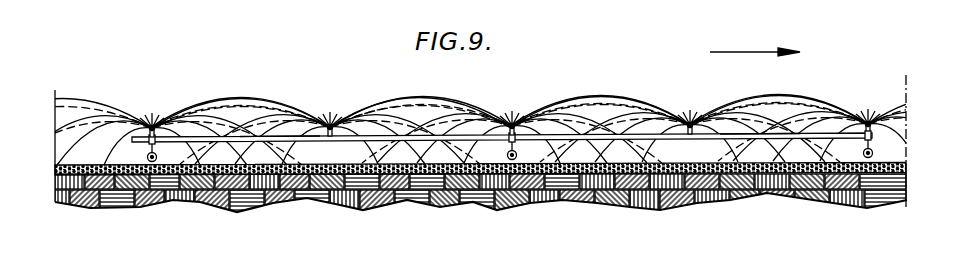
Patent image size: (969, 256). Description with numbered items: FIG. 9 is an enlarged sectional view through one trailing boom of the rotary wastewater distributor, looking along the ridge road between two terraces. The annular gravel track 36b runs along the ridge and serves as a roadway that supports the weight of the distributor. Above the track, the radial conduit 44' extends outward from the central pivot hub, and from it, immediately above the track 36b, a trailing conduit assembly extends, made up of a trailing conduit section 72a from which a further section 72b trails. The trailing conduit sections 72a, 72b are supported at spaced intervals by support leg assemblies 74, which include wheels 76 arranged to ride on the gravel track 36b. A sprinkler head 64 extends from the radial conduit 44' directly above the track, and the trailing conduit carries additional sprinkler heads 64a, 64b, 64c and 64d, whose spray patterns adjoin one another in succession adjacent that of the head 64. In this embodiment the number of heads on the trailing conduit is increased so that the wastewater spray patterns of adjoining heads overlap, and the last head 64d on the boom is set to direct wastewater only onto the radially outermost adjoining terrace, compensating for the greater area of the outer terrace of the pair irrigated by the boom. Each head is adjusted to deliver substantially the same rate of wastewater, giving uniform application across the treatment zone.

The track 36b is at (484, 157).
The radial conduit 44' is at (883, 109).
The sprinkler head 64 is at (866, 123).
The sprinkler head 64a is at (691, 124).
The sprinkler head 64b is at (514, 125).
The sprinkler head 64c is at (332, 126).
The sprinkler head 64d is at (152, 127).
The trailing conduit section 72a is at (754, 139).
The trailing conduit section 72b is at (280, 138).
The support leg assembly 74 is at (160, 143).
The wheel 76 is at (147, 156).